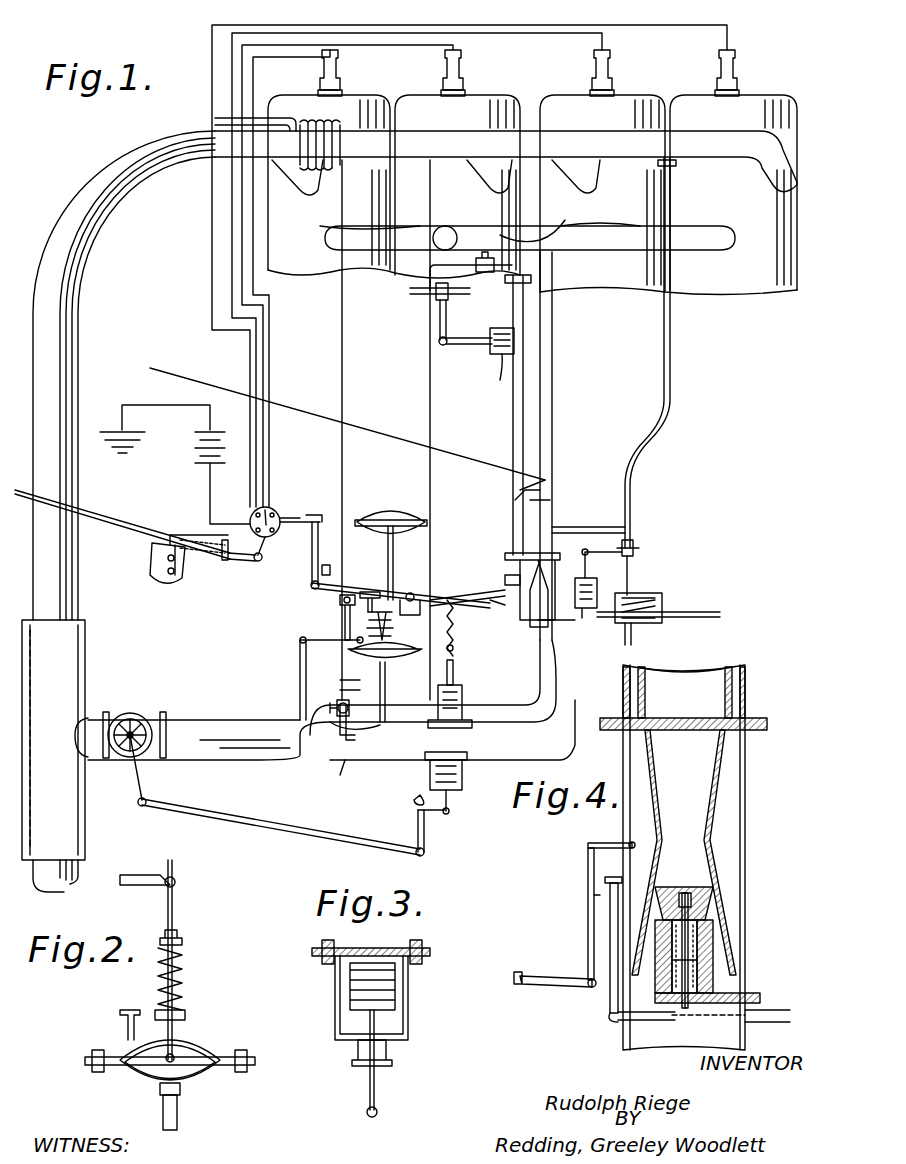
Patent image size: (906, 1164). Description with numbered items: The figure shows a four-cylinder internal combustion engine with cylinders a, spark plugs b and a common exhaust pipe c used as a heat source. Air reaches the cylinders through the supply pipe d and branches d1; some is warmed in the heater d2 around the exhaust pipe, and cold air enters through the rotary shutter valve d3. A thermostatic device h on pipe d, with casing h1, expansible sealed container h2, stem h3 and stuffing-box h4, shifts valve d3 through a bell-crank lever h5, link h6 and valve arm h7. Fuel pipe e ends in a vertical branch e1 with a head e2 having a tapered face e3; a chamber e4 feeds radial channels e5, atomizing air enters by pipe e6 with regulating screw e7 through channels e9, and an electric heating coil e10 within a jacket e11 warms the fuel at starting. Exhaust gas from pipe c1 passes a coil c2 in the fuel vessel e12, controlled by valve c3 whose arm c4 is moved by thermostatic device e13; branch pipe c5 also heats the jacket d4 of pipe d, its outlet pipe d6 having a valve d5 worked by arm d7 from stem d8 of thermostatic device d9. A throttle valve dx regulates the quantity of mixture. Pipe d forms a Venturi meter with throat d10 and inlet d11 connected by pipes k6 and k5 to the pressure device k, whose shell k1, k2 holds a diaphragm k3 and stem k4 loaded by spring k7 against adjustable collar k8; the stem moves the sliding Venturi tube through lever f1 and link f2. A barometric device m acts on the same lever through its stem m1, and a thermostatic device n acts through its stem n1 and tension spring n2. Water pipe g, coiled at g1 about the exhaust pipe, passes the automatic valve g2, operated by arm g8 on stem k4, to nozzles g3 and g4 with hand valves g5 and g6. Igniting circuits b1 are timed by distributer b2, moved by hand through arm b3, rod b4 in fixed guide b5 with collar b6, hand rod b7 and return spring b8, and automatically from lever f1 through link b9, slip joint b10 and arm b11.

In FIG. 1, the cylinders a is at (532, 194).
In FIG. 1, the spark plugs b is at (352, 64).
In FIG. 1, the igniting circuits b1 is at (258, 385).
In FIG. 1, the timing device or distributer b2 is at (275, 512).
In FIG. 1, the arm b3 is at (272, 566).
In FIG. 1, the rod b4 is at (238, 562).
In FIG. 1, the fixed guide b5 is at (150, 555).
In FIG. 1, the collar b6 is at (222, 560).
In FIG. 1, the hand-operating rod b7 is at (112, 530).
In FIG. 1, the spring b8 is at (195, 530).
In FIG. 1, the link b9 is at (322, 580).
In FIG. 1, the slip joint b10 is at (320, 525).
In FIG. 1, the arm of the timer b11 is at (300, 512).
In FIG. 1, the exhaust pipe c is at (90, 190).
In FIG. 1, the pipe c1 is at (670, 410).
In FIG. 1, the coil c2 is at (650, 593).
In FIG. 1, the valve c3 is at (630, 560).
In FIG. 1, the arm c4 is at (633, 545).
In FIG. 1, the branch pipe c5 is at (600, 527).
In FIG. 1, the air and mixture supply pipe d is at (552, 395).
In FIG. 4, the air and mixture supply pipe d is at (625, 1030).
In FIG. 3, the air and mixture supply pipe d is at (430, 950).
In FIG. 1, the branches d1 is at (370, 230).
In FIG. 1, the sleeve, stove or heater d2 is at (85, 645).
In FIG. 1, the controllable valve d3 is at (138, 725).
In FIG. 1, the jacket d4 is at (552, 482).
In FIG. 4, the jacket d4 is at (733, 690).
In FIG. 1, the valve d5 is at (436, 300).
In FIG. 1, the outlet pipe d6 is at (410, 291).
In FIG. 1, the arm d7 is at (440, 330).
In FIG. 1, the stem d8 is at (490, 340).
In FIG. 1, the thermostatic device d9 is at (478, 374).
In FIG. 1, the throat d10 is at (366, 736).
In FIG. 1, the inlet d11 is at (330, 730).
In FIG. 1, the throttle valve dx is at (515, 500).
In FIG. 1, the fuel pipe e is at (712, 605).
In FIG. 4, the fuel pipe e is at (745, 996).
In FIG. 1, the nozzle or vertical branch e1 is at (548, 615).
In FIG. 4, the nozzle or vertical branch e1 is at (655, 1016).
In FIG. 4, the head e2 is at (698, 930).
In FIG. 4, the coned or tapered face e3 is at (708, 915).
In FIG. 4, the chamber e4 is at (690, 886).
In FIG. 4, the radial channels e5 is at (588, 845).
In FIG. 4, the pipe e6 is at (610, 945).
In FIG. 4, the regulating screw e7 is at (588, 875).
In FIG. 4, the channels e9 is at (690, 940).
In FIG. 4, the electric heating coil e10 is at (693, 950).
In FIG. 4, the jacket e11 is at (697, 962).
In FIG. 1, the vessel e12 is at (662, 615).
In FIG. 1, the thermostatic device e13 is at (597, 588).
In FIG. 1, the lever f1 is at (455, 597).
In FIG. 4, the lever f1 is at (712, 880).
In FIG. 1, the link f2 is at (493, 587).
In FIG. 4, the link f2 is at (594, 893).
In FIG. 1, the water supply pipe g is at (215, 118).
In FIG. 1, the coil g1 is at (312, 190).
In FIG. 1, the controlling valve g2 is at (340, 600).
In FIG. 1, the nozzle g3 is at (355, 775).
In FIG. 1, the nozzle g4 is at (494, 265).
In FIG. 1, the hand-operated valve g5 is at (330, 708).
In FIG. 1, the hand-operated valve g6 is at (540, 222).
In FIG. 1, the arm g8 is at (314, 577).
In FIG. 2, the arm g8 is at (140, 870).
In FIG. 1, the thermostatic device h is at (462, 778).
In FIG. 3, the thermostatic device h is at (335, 1005).
In FIG. 3, the outer shell or casing h1 is at (425, 985).
In FIG. 3, the expansible sealed container h2 is at (350, 975).
In FIG. 1, the stem h3 is at (415, 795).
In FIG. 3, the stem h3 is at (370, 1090).
In FIG. 3, the stuffing-box h4 is at (358, 1055).
In FIG. 1, the bell-crank lever h5 is at (428, 830).
In FIG. 1, the link h6 is at (300, 840).
In FIG. 1, the arm h7 is at (150, 785).
In FIG. 1, the fluid pressure device k is at (412, 635).
In FIG. 2, the fluid pressure device k is at (205, 1042).
In FIG. 2, the shell part k1 is at (230, 1050).
In FIG. 2, the shell part k2 is at (130, 1080).
In FIG. 2, the flexible diaphragm k3 is at (200, 1085).
In FIG. 1, the stem k4 is at (378, 572).
In FIG. 2, the stem k4 is at (175, 865).
In FIG. 1, the pipe k5 is at (315, 655).
In FIG. 2, the pipe k5 is at (120, 1010).
In FIG. 1, the pipe k6 is at (385, 700).
In FIG. 2, the pipe k6 is at (177, 1125).
In FIG. 1, the spiral spring k7 is at (414, 592).
In FIG. 2, the spiral spring k7 is at (182, 970).
In FIG. 2, the adjustable collar k8 is at (182, 938).
In FIG. 1, the barometric device m is at (415, 500).
In FIG. 1, the stem m1 is at (385, 548).
In FIG. 1, the thermostatic device n is at (462, 700).
In FIG. 1, the stem n1 is at (453, 672).
In FIG. 1, the tension spring n2 is at (453, 640).